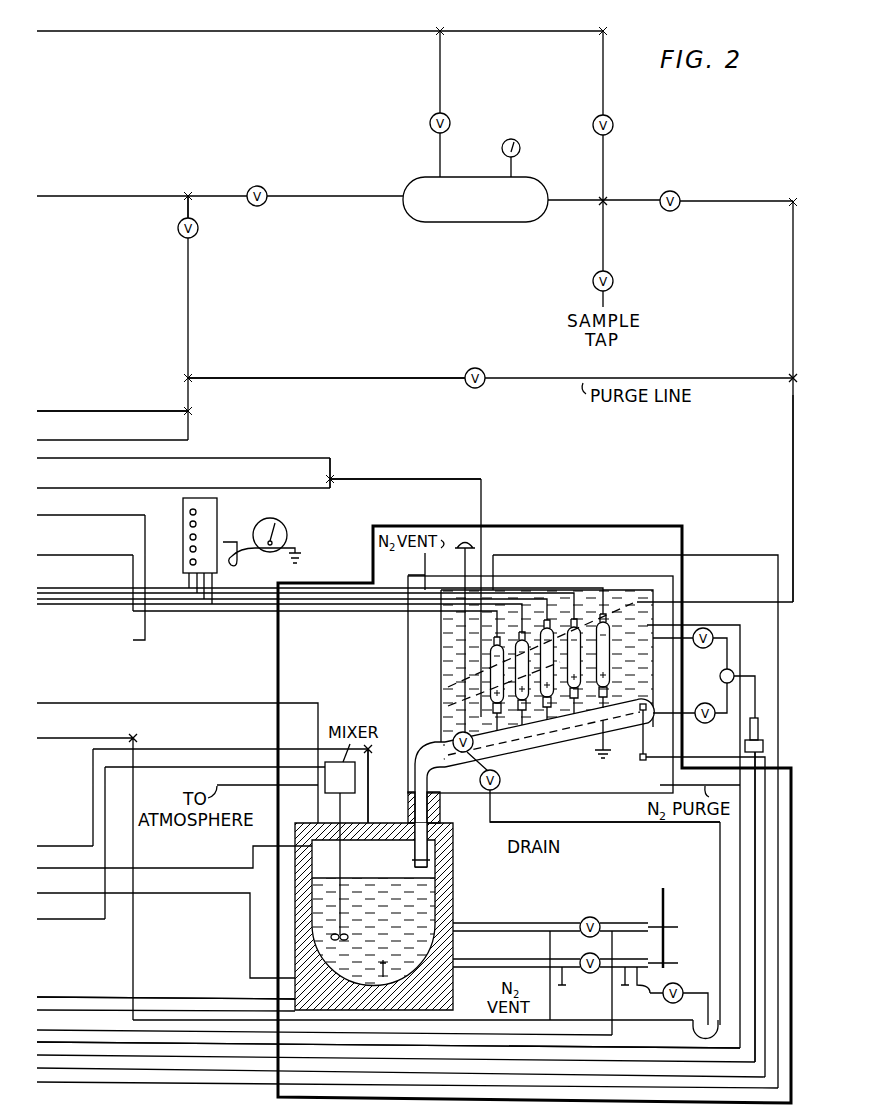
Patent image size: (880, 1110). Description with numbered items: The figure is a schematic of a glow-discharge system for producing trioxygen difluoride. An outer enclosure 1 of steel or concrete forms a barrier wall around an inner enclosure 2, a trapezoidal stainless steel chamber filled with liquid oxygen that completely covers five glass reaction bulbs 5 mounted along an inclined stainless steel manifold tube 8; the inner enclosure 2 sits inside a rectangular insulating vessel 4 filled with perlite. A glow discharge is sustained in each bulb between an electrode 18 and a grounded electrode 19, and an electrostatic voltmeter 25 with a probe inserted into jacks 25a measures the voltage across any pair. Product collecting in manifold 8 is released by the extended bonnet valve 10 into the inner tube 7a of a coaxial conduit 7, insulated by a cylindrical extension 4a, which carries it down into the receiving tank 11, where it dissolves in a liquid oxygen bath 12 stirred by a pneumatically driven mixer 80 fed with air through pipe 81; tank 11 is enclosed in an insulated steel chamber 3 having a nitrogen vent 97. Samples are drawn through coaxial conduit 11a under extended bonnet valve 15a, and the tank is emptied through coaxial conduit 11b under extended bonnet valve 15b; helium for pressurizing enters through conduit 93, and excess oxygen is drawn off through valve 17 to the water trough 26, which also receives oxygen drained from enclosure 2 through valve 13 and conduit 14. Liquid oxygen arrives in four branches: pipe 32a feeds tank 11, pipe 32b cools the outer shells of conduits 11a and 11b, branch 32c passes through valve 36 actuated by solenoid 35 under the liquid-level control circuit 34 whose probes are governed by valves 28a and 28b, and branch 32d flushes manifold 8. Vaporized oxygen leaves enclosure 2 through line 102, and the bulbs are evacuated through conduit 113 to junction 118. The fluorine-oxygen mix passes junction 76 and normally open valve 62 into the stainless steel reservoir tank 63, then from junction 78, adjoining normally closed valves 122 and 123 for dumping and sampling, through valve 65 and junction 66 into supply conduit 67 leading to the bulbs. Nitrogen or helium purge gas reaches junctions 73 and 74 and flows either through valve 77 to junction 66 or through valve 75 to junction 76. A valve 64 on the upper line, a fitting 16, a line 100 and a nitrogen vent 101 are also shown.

The outer enclosure 1 is at (652, 528).
The inner enclosure 2 is at (441, 643).
The outer chamber 3 is at (454, 878).
The insulating vessel 4 is at (408, 667).
The cylindrical extension 4a is at (410, 808).
The reaction bulbs 5 is at (583, 664).
The coaxial conduit 7 is at (431, 812).
The inner tube 7a is at (440, 851).
The inclined manifold tube 8 is at (558, 728).
The extended bonnet valve 10 is at (465, 530).
The receiving tank 11 is at (454, 905).
The coaxial conduit 11a is at (503, 922).
The coaxial conduit 11b is at (492, 958).
The bath 12 is at (372, 878).
The valve 13 is at (500, 778).
The conduit 14 is at (593, 825).
The extended bonnet valve 15a is at (598, 920).
The extended bonnet valve 15b is at (590, 975).
The fitting 16 is at (643, 992).
The valve 17 is at (681, 985).
The electrode 18 is at (445, 688).
The grounded electrode 19 is at (446, 707).
The electrostatic voltmeter 25 is at (287, 530).
The jacks 25a is at (218, 519).
The water trough 26 is at (725, 1020).
The valve 28a is at (673, 648).
The valve 28b is at (695, 708).
The pipe 32a is at (165, 692).
The pipe 32b is at (136, 738).
The third branch pipe 32c is at (755, 860).
The fourth branch pipe 32d is at (662, 763).
The liquid-level control circuit 34 is at (735, 671).
The solenoid 35 is at (750, 733).
The valve 36 is at (745, 753).
The valve 62 is at (261, 208).
The reservoir tank 63 is at (490, 222).
The valve 64 is at (452, 118).
The valve 65 is at (677, 192).
The junction 66 is at (793, 376).
The supply conduit 67 is at (793, 432).
The junction 73 is at (192, 415).
The junction 74 is at (192, 376).
The valve 75 is at (199, 232).
The junction 76 is at (190, 193).
The valve 77 is at (487, 386).
The junction 78 is at (610, 196).
The mixer 80 is at (356, 772).
The pipe 81 is at (103, 921).
The conduit 93 is at (89, 846).
The vent 97 is at (487, 1004).
The line 100 is at (88, 1042).
The nitrogen vent 101 is at (423, 565).
The line 102 is at (552, 558).
The conduit 113 is at (430, 479).
The junction 118 is at (336, 470).
The valve 122 is at (613, 121).
The valve 123 is at (613, 280).